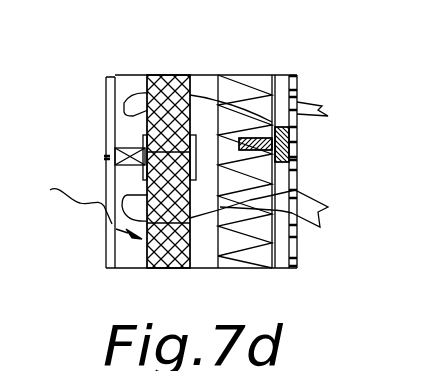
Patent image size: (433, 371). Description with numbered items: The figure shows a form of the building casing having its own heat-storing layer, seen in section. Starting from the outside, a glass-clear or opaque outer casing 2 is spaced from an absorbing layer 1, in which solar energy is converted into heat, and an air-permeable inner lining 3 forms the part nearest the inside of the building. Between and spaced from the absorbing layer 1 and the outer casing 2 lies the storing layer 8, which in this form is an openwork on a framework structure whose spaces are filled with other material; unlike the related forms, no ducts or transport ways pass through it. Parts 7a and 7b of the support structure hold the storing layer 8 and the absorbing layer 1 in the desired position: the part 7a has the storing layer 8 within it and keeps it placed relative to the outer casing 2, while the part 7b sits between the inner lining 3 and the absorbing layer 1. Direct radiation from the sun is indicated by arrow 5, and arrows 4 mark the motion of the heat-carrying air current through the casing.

The absorbing layer 1 is at (247, 94).
The outer casing 2 is at (107, 95).
The air-permeable inner lining 3 is at (297, 78).
The arrows marking motion of heat carrying medium 4 is at (322, 106).
The arrow indicating direct solar radiation 5 is at (87, 210).
The support structure part 7a is at (107, 145).
The support structure part 7b is at (283, 147).
The storing layer 8 is at (148, 262).